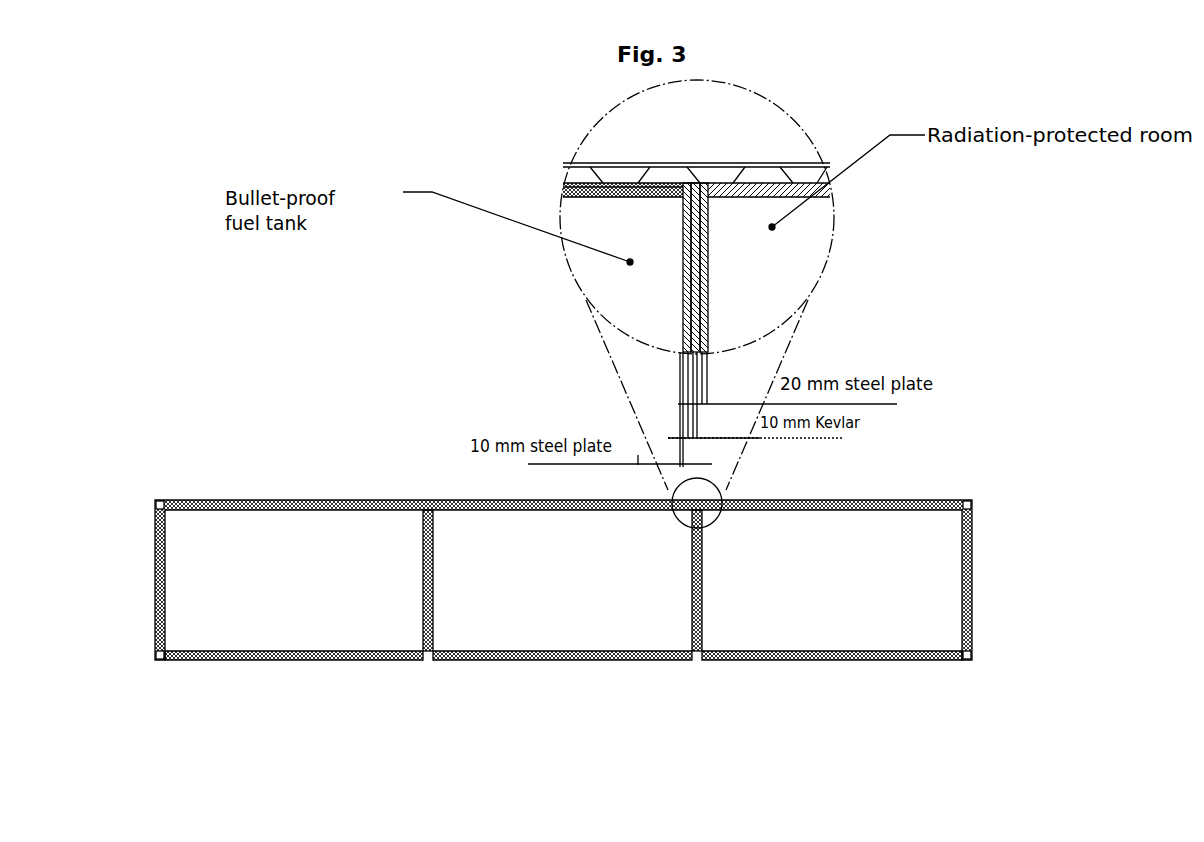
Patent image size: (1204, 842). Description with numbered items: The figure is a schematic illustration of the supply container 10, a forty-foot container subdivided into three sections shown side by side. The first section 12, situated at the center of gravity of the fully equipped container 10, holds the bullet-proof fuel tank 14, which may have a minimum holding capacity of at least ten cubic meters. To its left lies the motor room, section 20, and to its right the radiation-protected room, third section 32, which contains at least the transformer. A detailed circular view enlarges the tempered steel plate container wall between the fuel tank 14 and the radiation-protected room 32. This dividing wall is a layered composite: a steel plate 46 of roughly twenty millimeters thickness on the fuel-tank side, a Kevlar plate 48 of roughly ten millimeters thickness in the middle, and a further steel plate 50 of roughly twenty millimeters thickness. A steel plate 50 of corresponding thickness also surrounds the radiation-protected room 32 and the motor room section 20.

The supply container 10 is at (314, 475).
The first section 12 is at (575, 636).
The bullet-proof fuel tank 14 is at (661, 580).
The motor room section 20 is at (300, 643).
The radiation-protected room 32 is at (862, 628).
The steel plate 46 is at (683, 315).
The Kevlar plate 48 is at (700, 315).
The steel plate 50 is at (710, 252).